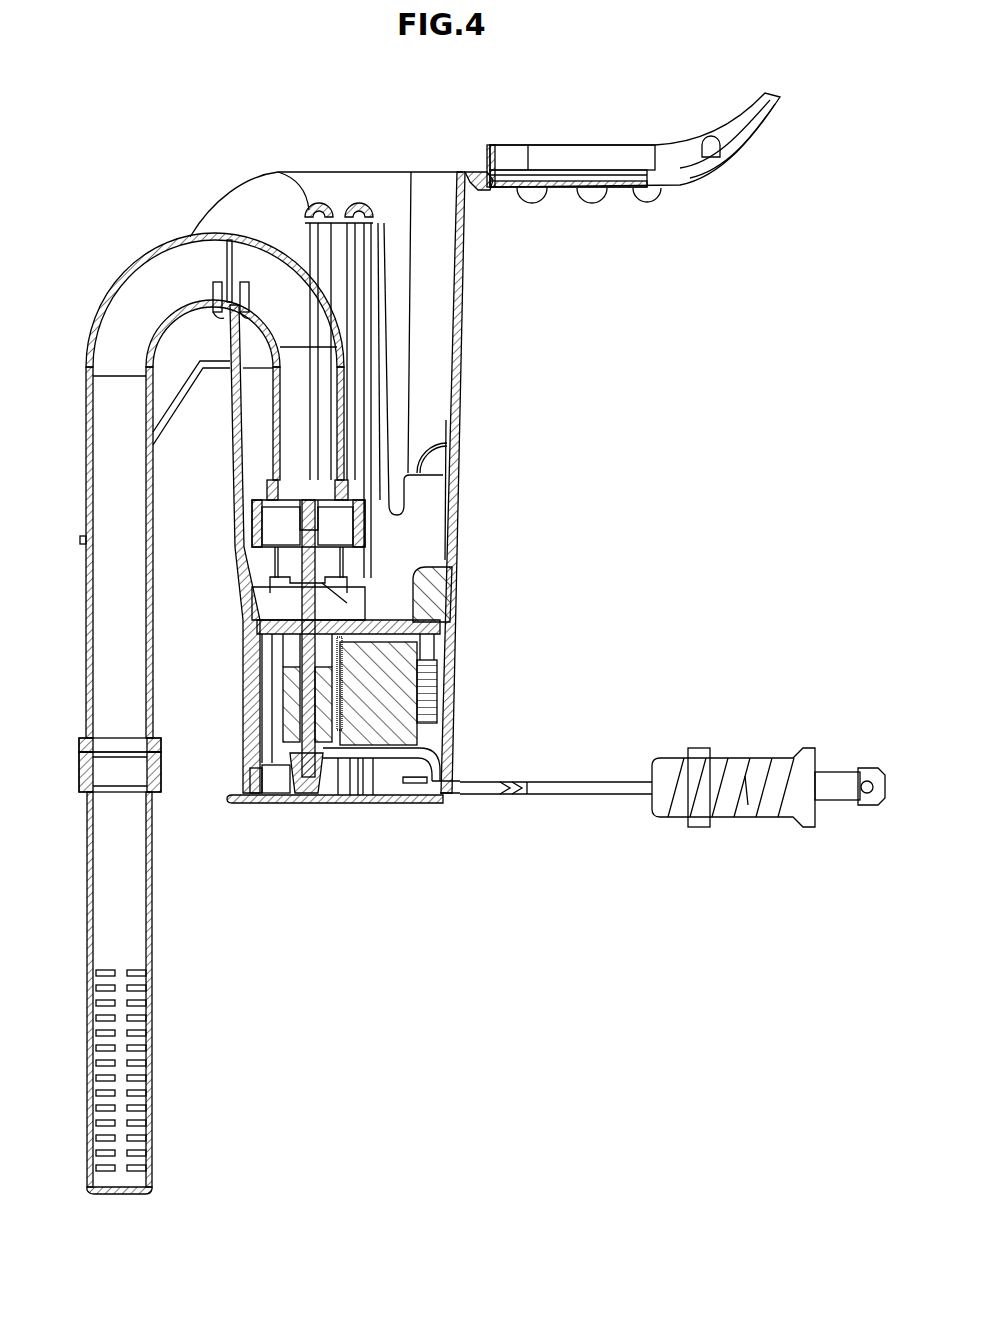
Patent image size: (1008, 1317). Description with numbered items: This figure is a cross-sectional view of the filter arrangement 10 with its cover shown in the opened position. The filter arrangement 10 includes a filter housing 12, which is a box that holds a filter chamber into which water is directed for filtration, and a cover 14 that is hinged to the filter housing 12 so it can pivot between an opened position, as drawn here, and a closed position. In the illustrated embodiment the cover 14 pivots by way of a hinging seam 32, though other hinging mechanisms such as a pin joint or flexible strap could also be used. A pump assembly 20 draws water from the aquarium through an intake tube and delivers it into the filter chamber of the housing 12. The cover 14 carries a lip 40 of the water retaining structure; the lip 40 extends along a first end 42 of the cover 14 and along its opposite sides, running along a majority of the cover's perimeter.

The filter arrangement 10 is at (183, 168).
The filter housing 12 is at (458, 490).
The cover 14 is at (723, 170).
The pump assembly 20 is at (492, 699).
The hinging seam 32 is at (478, 175).
The lip 40 is at (588, 160).
The first end 42 is at (492, 190).